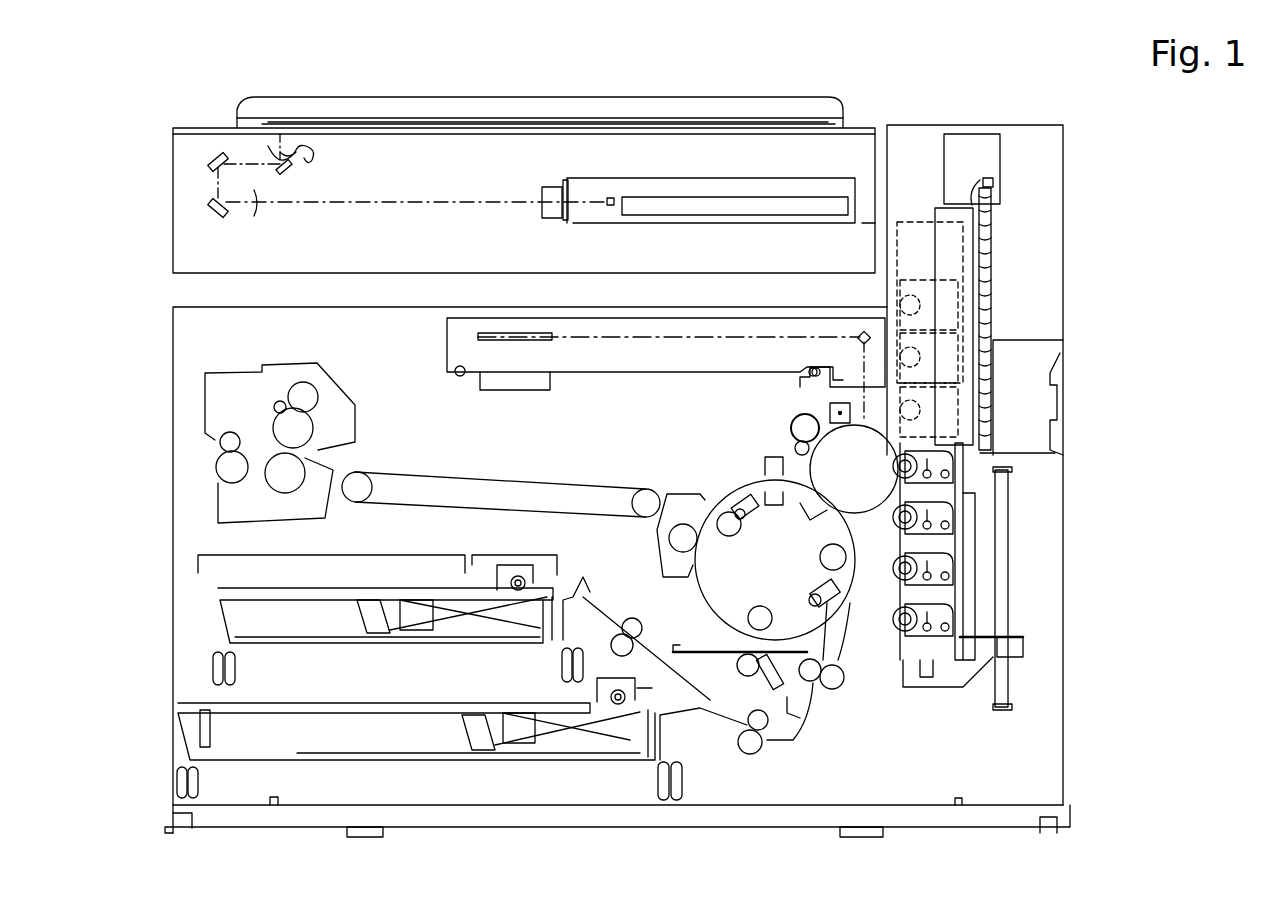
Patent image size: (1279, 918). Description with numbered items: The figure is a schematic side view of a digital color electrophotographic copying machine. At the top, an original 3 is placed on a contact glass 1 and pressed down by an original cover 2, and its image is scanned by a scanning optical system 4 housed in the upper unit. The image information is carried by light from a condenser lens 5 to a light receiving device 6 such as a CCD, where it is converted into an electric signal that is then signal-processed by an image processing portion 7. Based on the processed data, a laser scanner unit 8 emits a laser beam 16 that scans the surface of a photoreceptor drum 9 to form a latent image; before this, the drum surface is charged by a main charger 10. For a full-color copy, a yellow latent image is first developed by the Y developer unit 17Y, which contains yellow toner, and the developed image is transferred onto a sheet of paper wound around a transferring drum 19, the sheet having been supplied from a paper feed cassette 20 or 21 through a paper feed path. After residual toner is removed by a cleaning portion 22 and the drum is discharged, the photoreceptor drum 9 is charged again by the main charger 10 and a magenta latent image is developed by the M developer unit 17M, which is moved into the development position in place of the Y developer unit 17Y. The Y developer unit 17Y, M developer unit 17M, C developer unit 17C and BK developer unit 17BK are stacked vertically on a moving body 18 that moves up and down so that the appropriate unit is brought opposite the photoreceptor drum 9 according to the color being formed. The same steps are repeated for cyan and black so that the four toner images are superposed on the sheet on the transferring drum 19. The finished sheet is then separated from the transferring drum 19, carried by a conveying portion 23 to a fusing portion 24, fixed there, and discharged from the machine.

The contact glass 1 is at (662, 124).
The original cover 2 is at (485, 97).
The original 3 is at (437, 124).
The scanning optical system 4 is at (268, 256).
The condenser lens 5 is at (548, 190).
The light receiving device 6 is at (613, 200).
The image processing portion 7 is at (765, 200).
The laser scanner unit 8 is at (580, 372).
The photoreceptor drum 9 is at (861, 500).
The main charger 10 is at (828, 413).
The laser beam 16 is at (832, 393).
The Y developer unit 17Y is at (950, 468).
The M developer unit 17M is at (950, 519).
The C developer unit 17C is at (950, 570).
The BK developer unit 17BK is at (940, 640).
The moving body 18 is at (900, 660).
The transferring drum 19 is at (700, 604).
The paper feed cassette 20 is at (292, 632).
The paper feed cassette 21 is at (404, 742).
The cleaning portion 22 is at (790, 430).
The conveying portion 23 is at (440, 486).
The fusing portion 24 is at (237, 384).